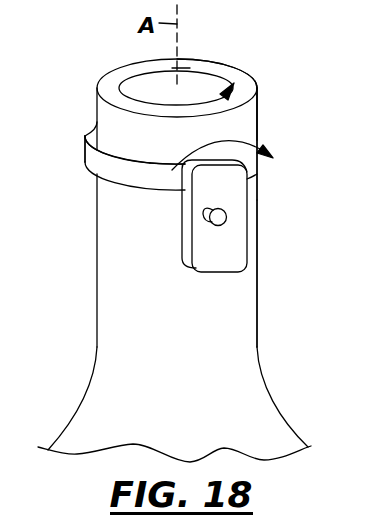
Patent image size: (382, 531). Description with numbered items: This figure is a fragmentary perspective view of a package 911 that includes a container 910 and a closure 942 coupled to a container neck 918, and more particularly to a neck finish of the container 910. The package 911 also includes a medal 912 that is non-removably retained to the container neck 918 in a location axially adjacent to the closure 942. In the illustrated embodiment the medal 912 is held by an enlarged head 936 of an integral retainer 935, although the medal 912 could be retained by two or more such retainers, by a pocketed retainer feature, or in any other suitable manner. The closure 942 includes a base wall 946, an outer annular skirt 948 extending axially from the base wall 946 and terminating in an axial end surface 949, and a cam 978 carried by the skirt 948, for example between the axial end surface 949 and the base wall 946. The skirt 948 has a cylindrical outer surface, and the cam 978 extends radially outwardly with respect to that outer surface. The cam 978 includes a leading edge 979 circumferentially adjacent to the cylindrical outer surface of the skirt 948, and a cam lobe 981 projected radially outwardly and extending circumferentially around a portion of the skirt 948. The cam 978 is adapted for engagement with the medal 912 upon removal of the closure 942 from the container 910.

The container 910 is at (283, 375).
The container neck 918 is at (280, 315).
The closure 942 is at (106, 48).
The package 911 is at (305, 50).
The base wall 946 is at (224, 77).
The outer annular skirt 948 is at (258, 117).
The axial end surface 949 is at (250, 168).
The cam 978 is at (64, 153).
The cam lobe 981 is at (88, 157).
The leading edge 979 is at (176, 164).
The medal 912 is at (260, 218).
The enlarged head 936 is at (225, 225).
The integral retainer 935 is at (244, 201).